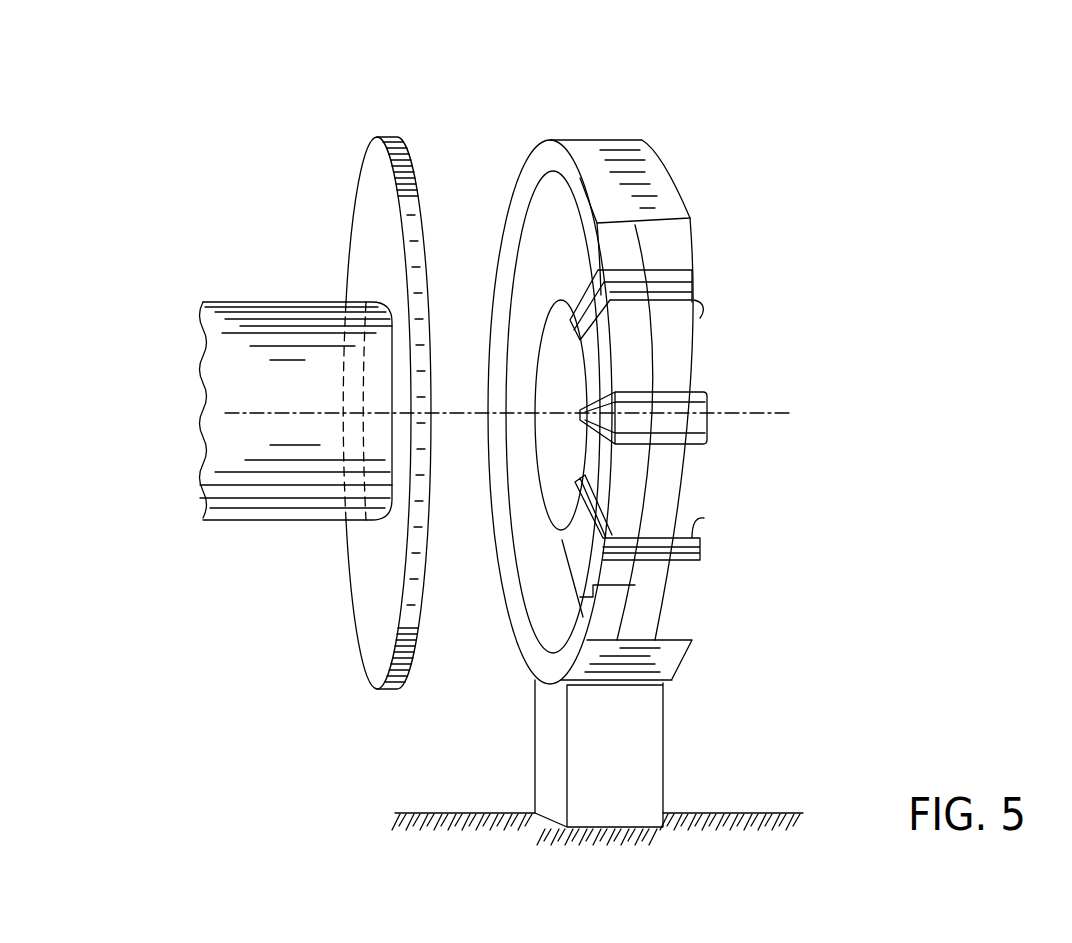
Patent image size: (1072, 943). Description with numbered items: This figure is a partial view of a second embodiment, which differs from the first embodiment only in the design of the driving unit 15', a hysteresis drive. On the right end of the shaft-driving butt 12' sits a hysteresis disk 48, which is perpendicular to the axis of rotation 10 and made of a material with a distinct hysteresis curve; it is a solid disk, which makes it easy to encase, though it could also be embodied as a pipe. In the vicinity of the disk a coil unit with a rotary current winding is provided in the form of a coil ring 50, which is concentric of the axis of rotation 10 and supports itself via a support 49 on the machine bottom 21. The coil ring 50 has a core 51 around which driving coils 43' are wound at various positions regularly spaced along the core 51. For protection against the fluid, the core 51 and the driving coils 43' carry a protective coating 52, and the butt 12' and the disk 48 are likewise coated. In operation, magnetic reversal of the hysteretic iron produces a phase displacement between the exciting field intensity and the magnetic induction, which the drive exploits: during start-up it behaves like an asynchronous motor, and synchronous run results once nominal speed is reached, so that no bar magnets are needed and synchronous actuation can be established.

The shaft-driving butt 12' is at (296, 377).
The hysteresis disk 48 is at (393, 137).
The driving unit 15' is at (525, 349).
The coil ring 50 is at (688, 187).
The core 51 is at (676, 362).
The protective coating 52 is at (604, 152).
The driving coils 43' is at (697, 414).
The axis of rotation 10 is at (778, 420).
The support 49 is at (643, 736).
The machine bottom 21 is at (462, 812).